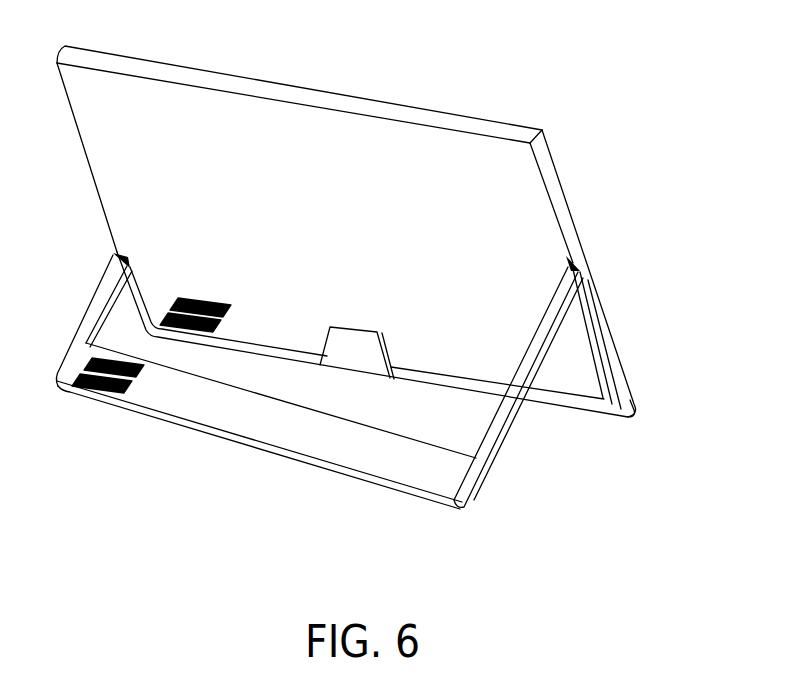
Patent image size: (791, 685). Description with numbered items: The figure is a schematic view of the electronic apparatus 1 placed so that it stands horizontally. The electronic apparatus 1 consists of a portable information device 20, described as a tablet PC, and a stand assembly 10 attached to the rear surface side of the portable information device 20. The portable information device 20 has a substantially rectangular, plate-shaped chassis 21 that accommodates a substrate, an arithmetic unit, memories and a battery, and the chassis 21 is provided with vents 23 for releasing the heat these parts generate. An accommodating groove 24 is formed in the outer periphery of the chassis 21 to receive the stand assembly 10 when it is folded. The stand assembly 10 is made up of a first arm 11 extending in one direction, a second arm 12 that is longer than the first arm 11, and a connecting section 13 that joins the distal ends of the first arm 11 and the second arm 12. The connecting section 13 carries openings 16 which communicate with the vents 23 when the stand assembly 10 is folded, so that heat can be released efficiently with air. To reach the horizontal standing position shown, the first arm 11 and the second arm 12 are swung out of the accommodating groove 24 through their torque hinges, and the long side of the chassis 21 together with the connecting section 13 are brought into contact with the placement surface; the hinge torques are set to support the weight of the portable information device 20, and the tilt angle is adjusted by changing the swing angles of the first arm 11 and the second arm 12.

The electronic apparatus 1 is at (598, 66).
The stand assembly 10 is at (401, 513).
The first arm 11 is at (87, 310).
The second arm 12 is at (496, 427).
The connecting section 13 is at (318, 447).
The openings 16 is at (106, 395).
The portable information device 20 is at (480, 104).
The chassis 21 is at (543, 219).
The vents 23 is at (217, 331).
The accommodating groove 24 is at (622, 418).